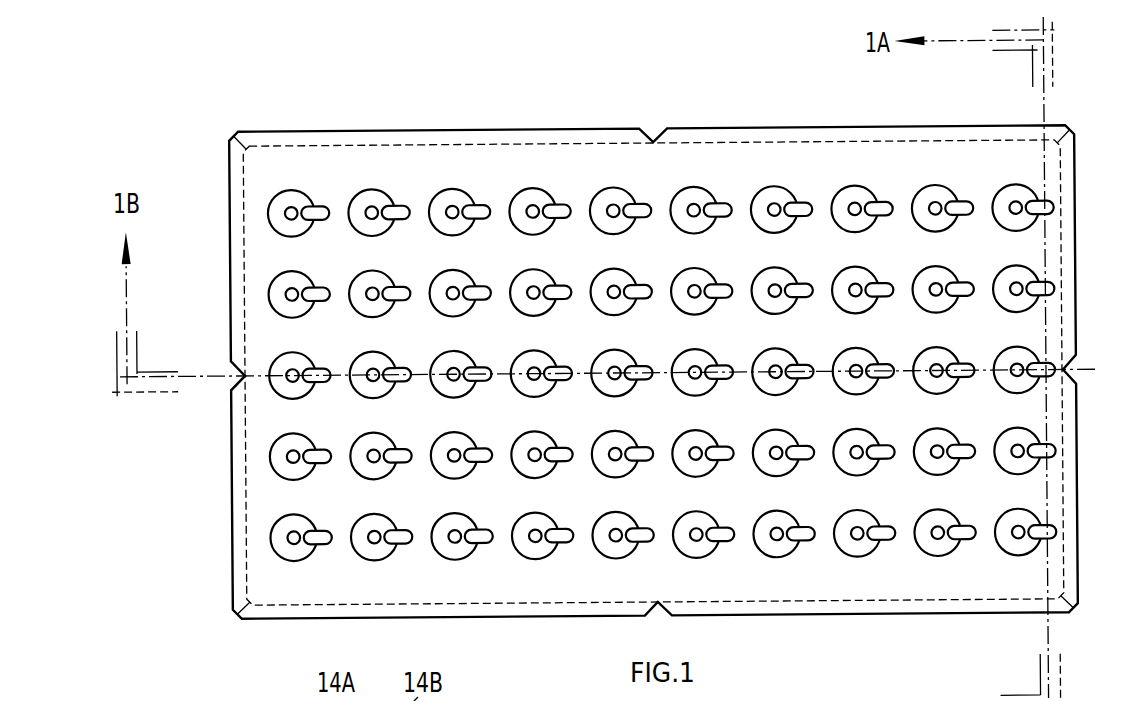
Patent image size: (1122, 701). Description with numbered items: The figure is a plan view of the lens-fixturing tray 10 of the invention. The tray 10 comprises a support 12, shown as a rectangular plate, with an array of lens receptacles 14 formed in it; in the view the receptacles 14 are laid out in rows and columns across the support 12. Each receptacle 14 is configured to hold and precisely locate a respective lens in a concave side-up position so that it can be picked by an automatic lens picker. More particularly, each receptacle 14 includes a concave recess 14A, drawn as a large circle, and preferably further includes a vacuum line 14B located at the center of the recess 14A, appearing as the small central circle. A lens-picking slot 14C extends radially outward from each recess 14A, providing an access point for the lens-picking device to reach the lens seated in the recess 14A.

The lens-fixturing tray 10 is at (603, 359).
The support 12 is at (737, 158).
The lens receptacles 14 is at (662, 296).
The concave recess 14A is at (525, 197).
The vacuum line 14B is at (537, 195).
The lens-picking slot 14C is at (562, 203).